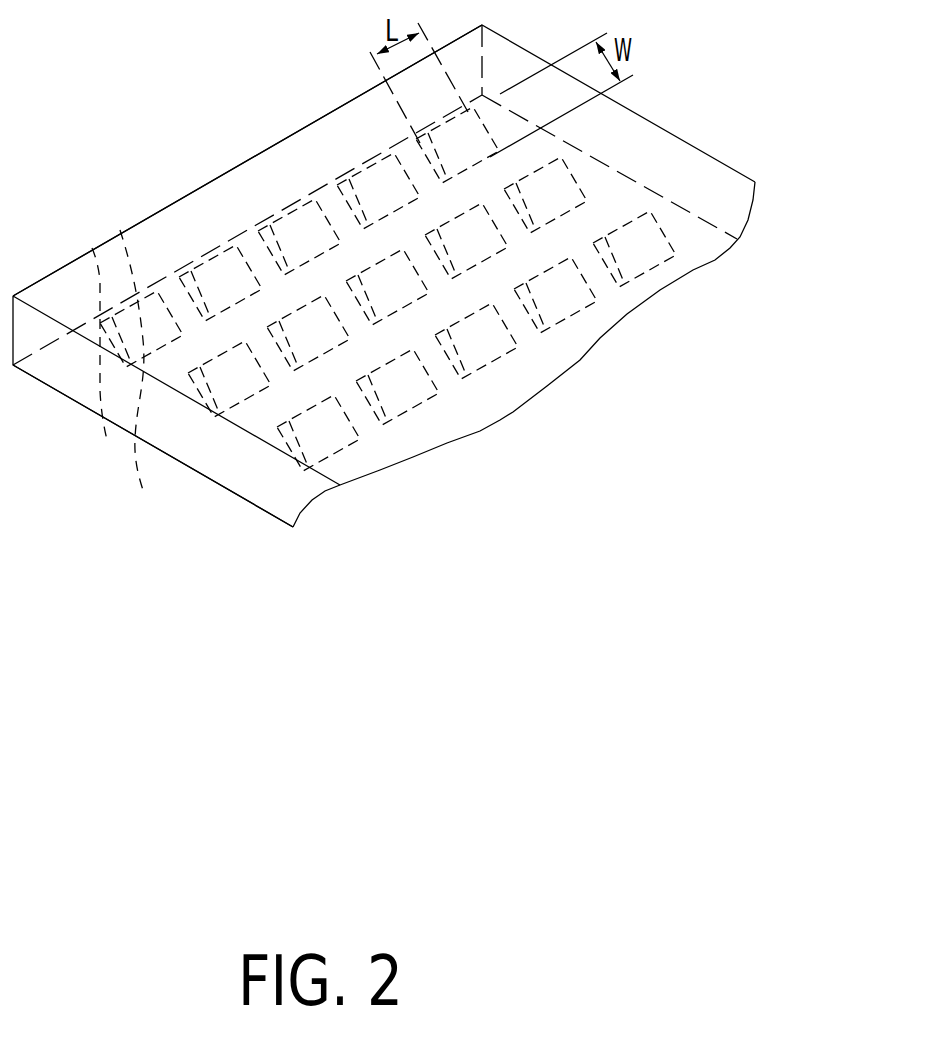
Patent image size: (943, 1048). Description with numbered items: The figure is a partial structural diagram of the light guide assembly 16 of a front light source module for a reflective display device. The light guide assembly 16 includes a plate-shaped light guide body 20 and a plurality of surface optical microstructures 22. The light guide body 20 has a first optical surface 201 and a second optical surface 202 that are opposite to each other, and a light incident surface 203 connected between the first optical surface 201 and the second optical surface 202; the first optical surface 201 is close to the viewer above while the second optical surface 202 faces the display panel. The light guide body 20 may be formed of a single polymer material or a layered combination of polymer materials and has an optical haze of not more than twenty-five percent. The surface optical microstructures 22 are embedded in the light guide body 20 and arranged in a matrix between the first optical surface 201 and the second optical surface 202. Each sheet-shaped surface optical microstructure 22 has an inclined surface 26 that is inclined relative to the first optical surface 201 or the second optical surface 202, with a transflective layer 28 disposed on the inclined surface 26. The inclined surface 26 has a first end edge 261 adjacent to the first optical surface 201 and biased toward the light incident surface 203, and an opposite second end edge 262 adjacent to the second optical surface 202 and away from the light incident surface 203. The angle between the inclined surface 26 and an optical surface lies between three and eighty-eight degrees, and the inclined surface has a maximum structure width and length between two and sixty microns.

The light guide assembly 16 is at (63, 122).
The light guide body 20 is at (257, 488).
The first optical surface 201 is at (291, 147).
The second optical surface 202 is at (274, 520).
The light incident surface 203 is at (226, 171).
The surface optical microstructure 22 is at (346, 458).
The inclined surface 26 is at (110, 352).
The first end edge 261 is at (92, 248).
The second end edge 262 is at (144, 379).
The transflective layer 28 is at (131, 313).